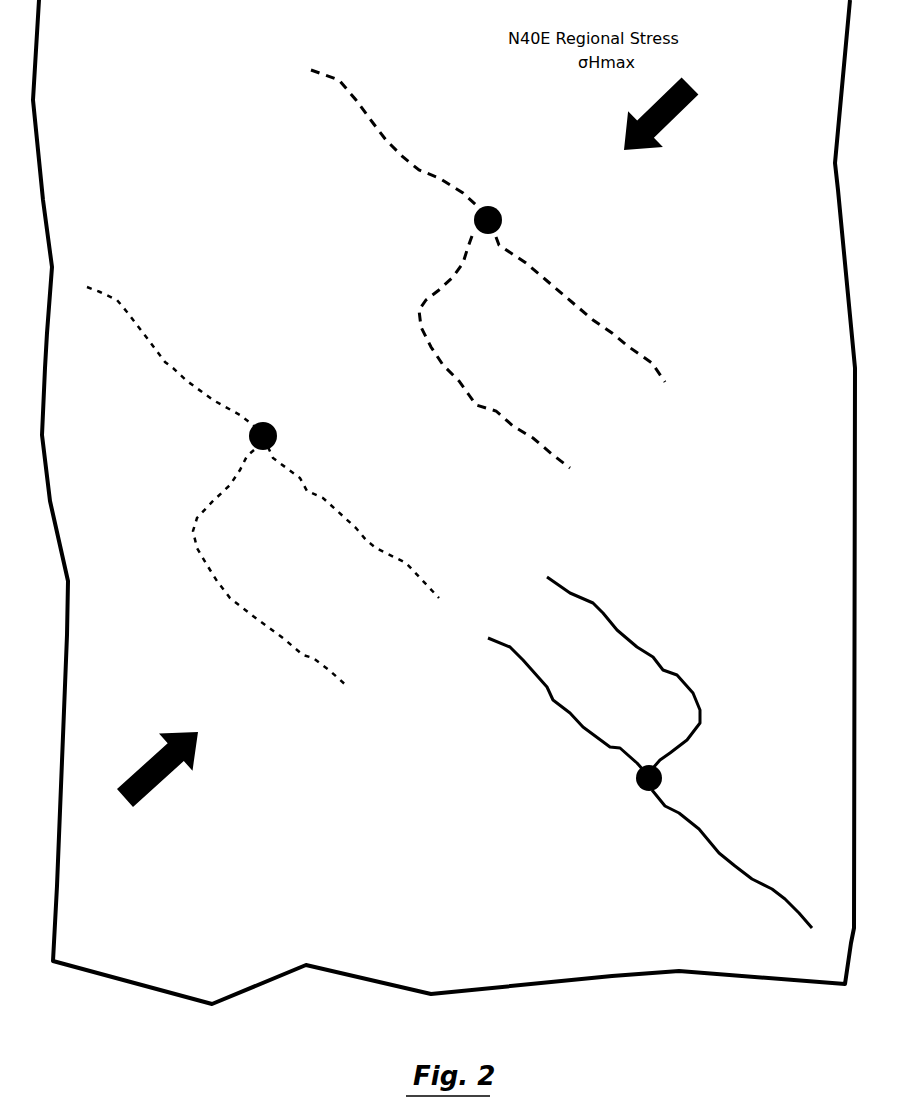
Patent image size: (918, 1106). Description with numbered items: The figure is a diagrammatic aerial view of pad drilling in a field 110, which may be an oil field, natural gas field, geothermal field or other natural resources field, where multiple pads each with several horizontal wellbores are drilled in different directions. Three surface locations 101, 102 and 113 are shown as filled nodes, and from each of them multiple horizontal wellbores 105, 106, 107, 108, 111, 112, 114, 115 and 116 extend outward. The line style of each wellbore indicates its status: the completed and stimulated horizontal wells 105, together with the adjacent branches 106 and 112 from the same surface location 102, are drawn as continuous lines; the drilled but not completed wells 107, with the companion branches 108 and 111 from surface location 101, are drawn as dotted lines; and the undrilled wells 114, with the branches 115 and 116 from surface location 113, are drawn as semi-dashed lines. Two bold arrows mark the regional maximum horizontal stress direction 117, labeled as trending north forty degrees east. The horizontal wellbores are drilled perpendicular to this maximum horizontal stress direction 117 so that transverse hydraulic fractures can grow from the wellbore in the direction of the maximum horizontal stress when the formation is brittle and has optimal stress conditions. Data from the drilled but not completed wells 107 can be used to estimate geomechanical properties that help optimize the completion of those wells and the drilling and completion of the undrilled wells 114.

The surface location 101 is at (278, 436).
The surface location 102 is at (663, 774).
The completed and stimulated horizontal well 105 is at (592, 737).
The horizontal wellbore 106 is at (779, 891).
The drilled but not completed well 107 is at (153, 342).
The horizontal wellbore 108 is at (364, 538).
The field 110 is at (444, 502).
The horizontal wellbore 111 is at (222, 581).
The horizontal wellbore 112 is at (663, 668).
The surface location 113 is at (502, 218).
The undrilled well 114 is at (483, 405).
The horizontal wellbore 115 is at (617, 330).
The horizontal wellbore 116 is at (389, 137).
The regional maximum horizontal stress direction 117 is at (669, 123).